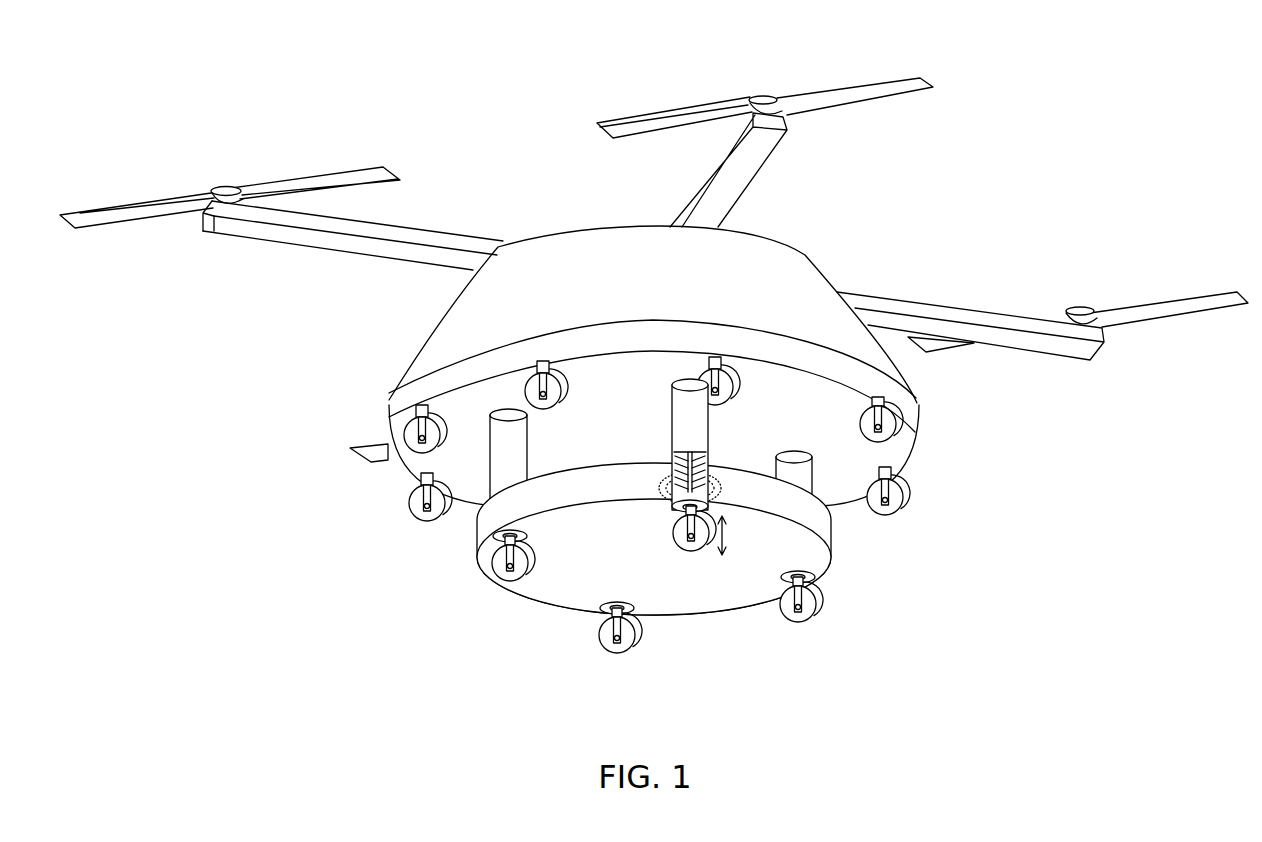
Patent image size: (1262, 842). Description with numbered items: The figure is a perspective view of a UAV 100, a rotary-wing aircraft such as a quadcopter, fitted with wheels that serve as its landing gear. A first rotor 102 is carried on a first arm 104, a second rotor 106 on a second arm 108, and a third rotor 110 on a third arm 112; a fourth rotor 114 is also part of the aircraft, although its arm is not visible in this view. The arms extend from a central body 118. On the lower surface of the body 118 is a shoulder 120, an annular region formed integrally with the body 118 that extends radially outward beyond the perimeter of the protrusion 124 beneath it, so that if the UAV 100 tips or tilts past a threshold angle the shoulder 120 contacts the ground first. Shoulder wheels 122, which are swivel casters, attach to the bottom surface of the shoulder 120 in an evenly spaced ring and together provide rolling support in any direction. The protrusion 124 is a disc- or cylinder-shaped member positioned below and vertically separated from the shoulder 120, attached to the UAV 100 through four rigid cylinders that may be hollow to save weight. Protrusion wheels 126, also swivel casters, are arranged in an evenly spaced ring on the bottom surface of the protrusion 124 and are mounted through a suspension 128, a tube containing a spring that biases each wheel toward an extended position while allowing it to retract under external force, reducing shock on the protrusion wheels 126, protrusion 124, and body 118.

The UAV 100 is at (1147, 120).
The first rotor 102 is at (320, 187).
The first arm 104 is at (432, 240).
The second rotor 106 is at (855, 95).
The second arm 108 is at (727, 188).
The third rotor 110 is at (1152, 303).
The third arm 112 is at (957, 313).
The fourth rotor 114 is at (370, 456).
The body 118 is at (792, 284).
The shoulder 120 is at (900, 460).
The shoulder wheels 122 is at (536, 372).
The protrusion 124 is at (677, 583).
The protrusion wheels 126 is at (673, 533).
The suspension 128 is at (671, 470).